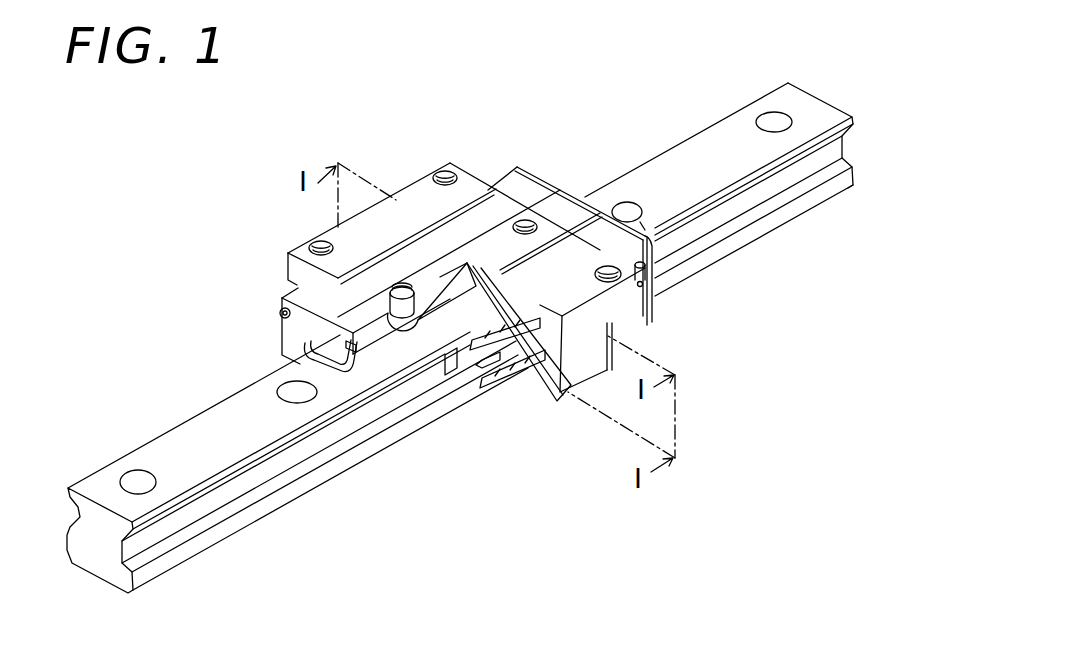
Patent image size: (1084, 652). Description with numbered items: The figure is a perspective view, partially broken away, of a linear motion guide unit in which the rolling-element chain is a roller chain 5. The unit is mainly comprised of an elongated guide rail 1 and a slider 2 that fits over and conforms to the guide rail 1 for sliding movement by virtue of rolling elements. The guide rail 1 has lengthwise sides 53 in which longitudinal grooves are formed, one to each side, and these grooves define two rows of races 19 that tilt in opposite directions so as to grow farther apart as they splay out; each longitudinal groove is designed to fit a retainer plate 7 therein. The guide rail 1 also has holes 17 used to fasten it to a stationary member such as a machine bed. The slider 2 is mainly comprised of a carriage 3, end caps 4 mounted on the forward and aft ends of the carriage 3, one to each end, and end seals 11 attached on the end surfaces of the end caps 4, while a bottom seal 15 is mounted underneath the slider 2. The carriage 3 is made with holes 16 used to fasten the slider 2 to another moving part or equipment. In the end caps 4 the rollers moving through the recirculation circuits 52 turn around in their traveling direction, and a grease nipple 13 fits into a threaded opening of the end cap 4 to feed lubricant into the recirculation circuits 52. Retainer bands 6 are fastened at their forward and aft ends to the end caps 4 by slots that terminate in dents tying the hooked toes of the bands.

The guide rail 1 is at (460, 328).
The slider 2 is at (517, 297).
The carriage 3 is at (622, 305).
The end cap 4 is at (532, 187).
The roller chain 5 is at (512, 385).
The retainer band 6 is at (472, 349).
The retainer plate 7 is at (450, 374).
The end seal 11 is at (318, 322).
The grease nipple 13 is at (652, 280).
The bottom seal 15 is at (488, 366).
The hole 16 is at (442, 176).
The hole 17 is at (773, 120).
The race 19 is at (298, 473).
The recirculation circuit 52 is at (560, 390).
The lengthwise side 53 is at (228, 528).